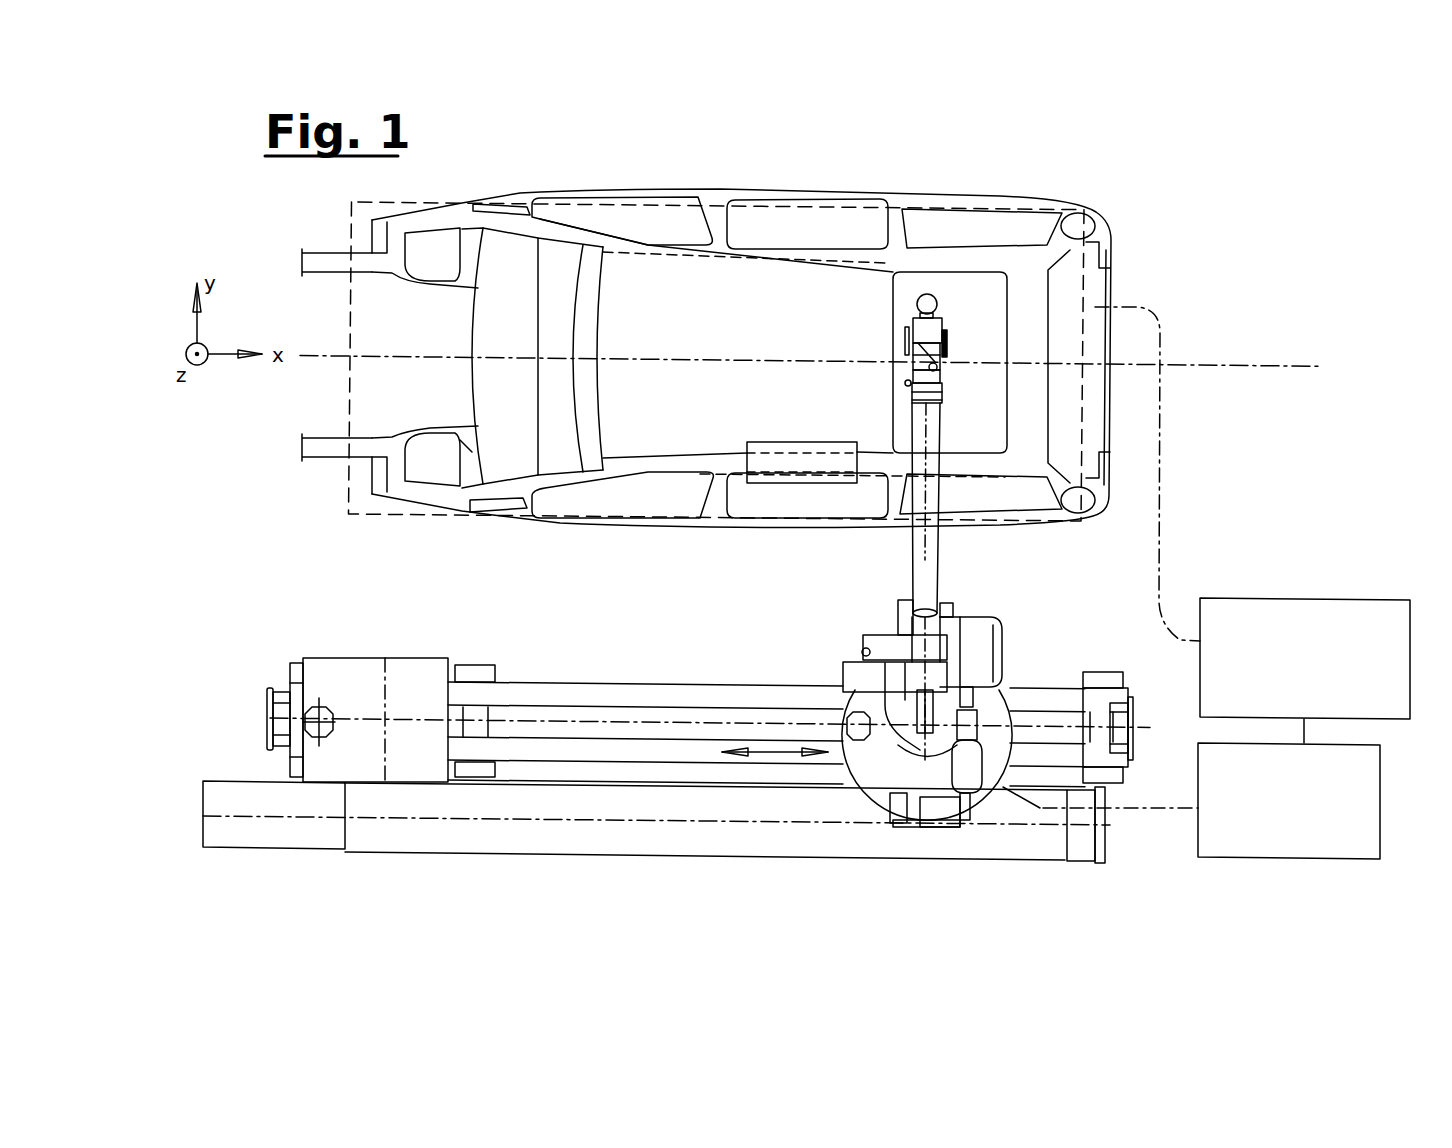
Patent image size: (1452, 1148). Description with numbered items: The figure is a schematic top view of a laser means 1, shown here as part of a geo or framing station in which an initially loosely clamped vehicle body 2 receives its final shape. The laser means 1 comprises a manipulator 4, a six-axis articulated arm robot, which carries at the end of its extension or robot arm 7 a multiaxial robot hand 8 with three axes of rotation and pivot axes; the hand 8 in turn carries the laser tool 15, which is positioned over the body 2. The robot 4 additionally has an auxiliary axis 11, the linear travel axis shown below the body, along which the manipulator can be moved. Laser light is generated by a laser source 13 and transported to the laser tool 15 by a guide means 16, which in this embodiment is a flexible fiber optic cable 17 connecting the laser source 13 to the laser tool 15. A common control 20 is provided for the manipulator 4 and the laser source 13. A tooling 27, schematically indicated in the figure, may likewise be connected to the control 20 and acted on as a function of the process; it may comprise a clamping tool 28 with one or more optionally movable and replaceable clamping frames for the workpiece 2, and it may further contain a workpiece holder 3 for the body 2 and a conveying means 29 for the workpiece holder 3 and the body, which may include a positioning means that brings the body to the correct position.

The laser means 1 is at (1160, 247).
The body 2 is at (973, 197).
The workpiece holder 3 is at (667, 364).
The conveying means 29 is at (345, 478).
The manipulator 4 is at (920, 575).
The robot arm 7 is at (938, 433).
The robot hand 8 is at (903, 335).
The auxiliary axis 11 is at (768, 725).
The laser source 13 is at (1297, 642).
The laser tool 15 is at (914, 296).
The guide means 16 is at (1153, 557).
The fiber optic cable 17 is at (1160, 430).
The control 20 is at (1250, 843).
The tooling 27 is at (720, 430).
The clamping tool 28 is at (790, 448).